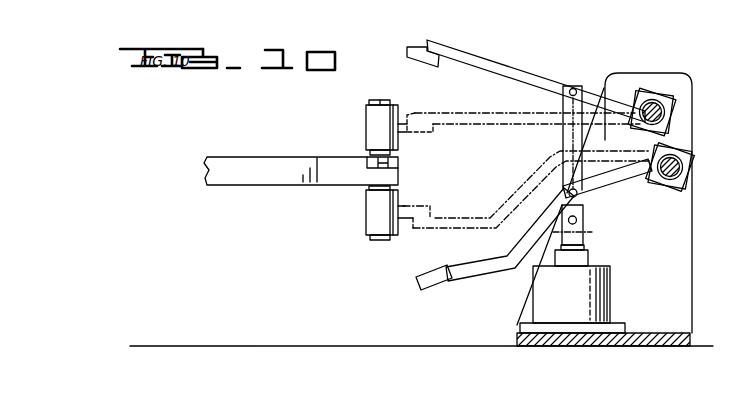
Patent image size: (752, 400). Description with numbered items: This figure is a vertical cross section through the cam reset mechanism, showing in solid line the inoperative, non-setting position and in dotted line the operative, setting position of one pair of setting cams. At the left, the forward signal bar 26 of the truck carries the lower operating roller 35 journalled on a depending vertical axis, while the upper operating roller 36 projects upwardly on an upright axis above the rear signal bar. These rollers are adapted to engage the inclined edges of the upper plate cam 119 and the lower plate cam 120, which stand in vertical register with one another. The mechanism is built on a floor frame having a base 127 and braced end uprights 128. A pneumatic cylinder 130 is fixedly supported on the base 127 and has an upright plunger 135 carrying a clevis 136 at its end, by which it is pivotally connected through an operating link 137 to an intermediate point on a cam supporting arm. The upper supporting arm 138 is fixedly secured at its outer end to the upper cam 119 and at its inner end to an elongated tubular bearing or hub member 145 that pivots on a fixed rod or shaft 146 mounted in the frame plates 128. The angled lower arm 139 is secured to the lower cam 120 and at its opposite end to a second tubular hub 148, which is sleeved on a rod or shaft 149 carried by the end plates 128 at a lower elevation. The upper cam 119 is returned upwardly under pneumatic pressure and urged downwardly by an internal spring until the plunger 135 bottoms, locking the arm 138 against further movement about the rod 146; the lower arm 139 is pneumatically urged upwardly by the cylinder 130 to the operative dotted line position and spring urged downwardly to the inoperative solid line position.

The forward signal bar 26 is at (337, 173).
The operating roller 35 is at (382, 238).
The operating roller 36 is at (372, 124).
The upper plate cam 119 is at (418, 49).
The lower plate cam 120 is at (432, 279).
The base 127 is at (636, 348).
The end upright 128 is at (681, 306).
The pneumatic cylinder 130 is at (601, 306).
The plunger 135 is at (587, 248).
The clevis 136 is at (586, 233).
The operating link 137 is at (565, 137).
The supporting arm 138 is at (527, 88).
The lower supporting arm 139 is at (508, 272).
The tubular bearing or hub member 145 is at (670, 95).
The fixed rod or shaft 146 is at (652, 100).
The tubular bearing or hub 148 is at (660, 184).
The rod or shaft 149 is at (688, 170).